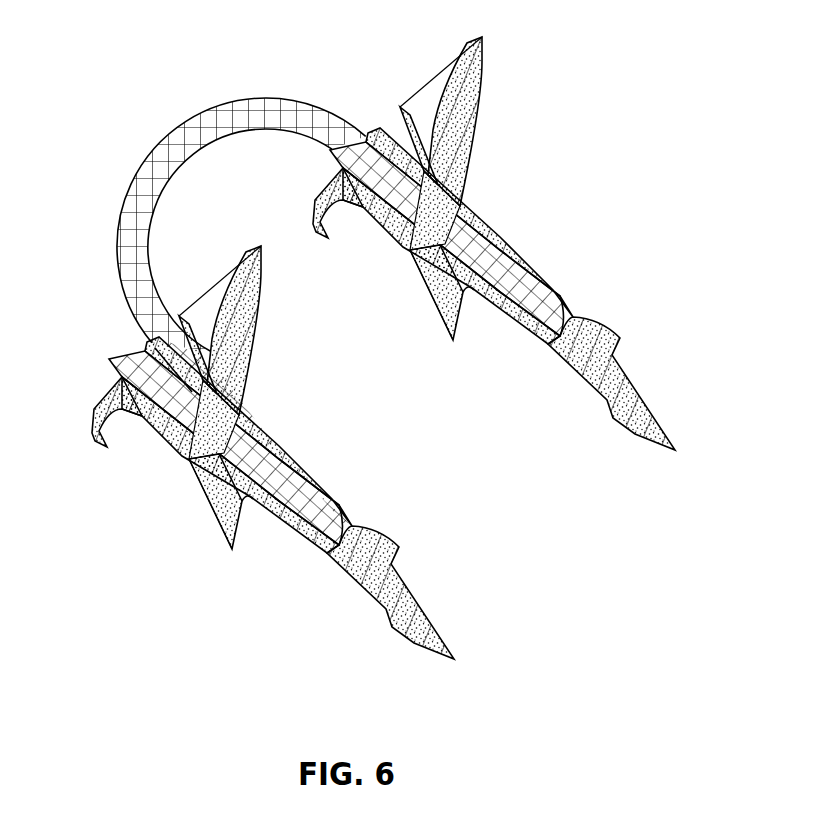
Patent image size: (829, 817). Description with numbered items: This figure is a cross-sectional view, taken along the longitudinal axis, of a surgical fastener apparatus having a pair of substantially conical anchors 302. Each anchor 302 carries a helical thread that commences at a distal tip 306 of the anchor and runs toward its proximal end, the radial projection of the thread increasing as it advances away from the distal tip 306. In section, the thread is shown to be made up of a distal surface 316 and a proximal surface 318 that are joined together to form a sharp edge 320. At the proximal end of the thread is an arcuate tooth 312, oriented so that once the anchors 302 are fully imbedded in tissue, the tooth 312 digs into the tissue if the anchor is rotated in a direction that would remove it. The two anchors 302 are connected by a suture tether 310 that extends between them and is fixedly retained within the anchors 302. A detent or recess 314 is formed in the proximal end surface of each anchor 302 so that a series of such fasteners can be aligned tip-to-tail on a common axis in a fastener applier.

The conical anchor 302 is at (497, 207).
The distal tip 306 is at (667, 403).
The suture tether 310 is at (145, 160).
The arcuate tooth 312 is at (313, 233).
The detent or recess 314 is at (385, 120).
The distal surface 316 is at (468, 300).
The proximal surface 318 is at (418, 280).
The sharp edge 320 is at (455, 345).